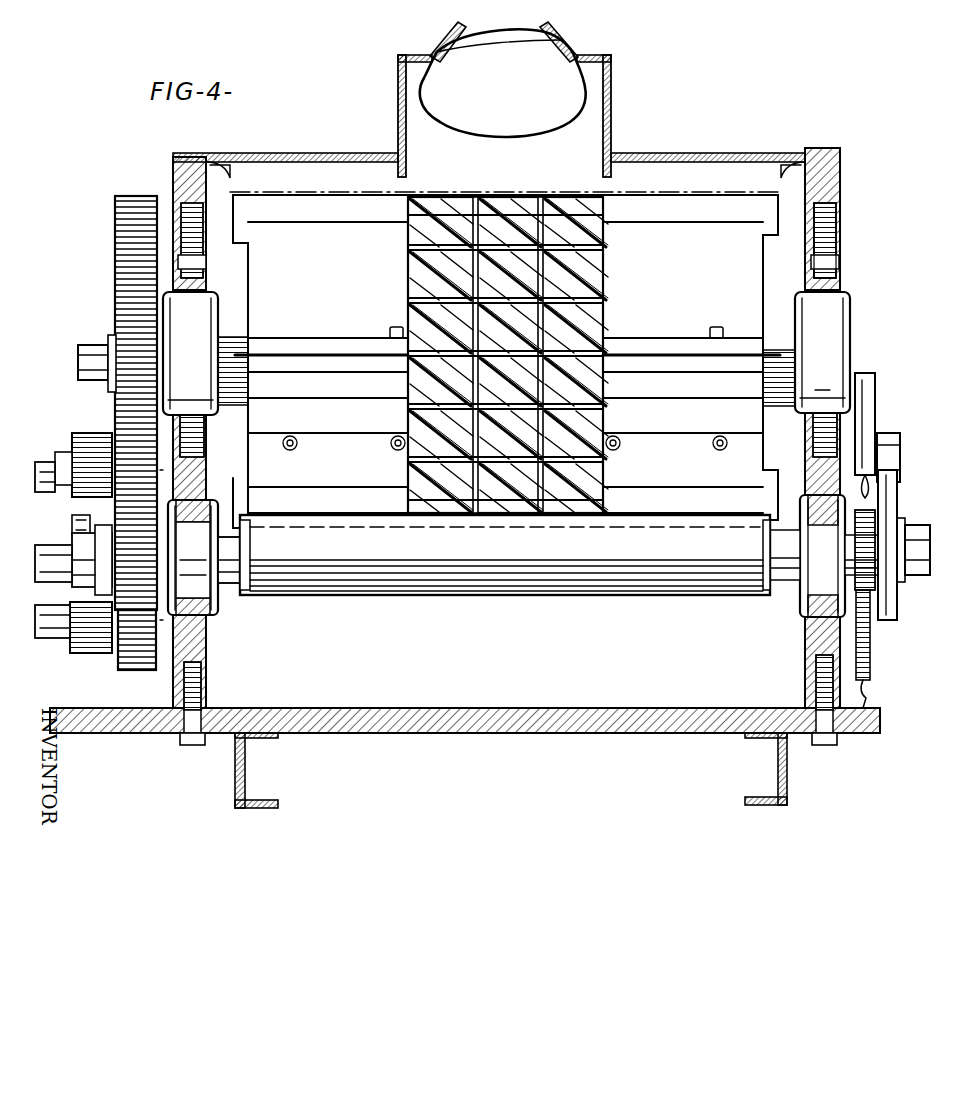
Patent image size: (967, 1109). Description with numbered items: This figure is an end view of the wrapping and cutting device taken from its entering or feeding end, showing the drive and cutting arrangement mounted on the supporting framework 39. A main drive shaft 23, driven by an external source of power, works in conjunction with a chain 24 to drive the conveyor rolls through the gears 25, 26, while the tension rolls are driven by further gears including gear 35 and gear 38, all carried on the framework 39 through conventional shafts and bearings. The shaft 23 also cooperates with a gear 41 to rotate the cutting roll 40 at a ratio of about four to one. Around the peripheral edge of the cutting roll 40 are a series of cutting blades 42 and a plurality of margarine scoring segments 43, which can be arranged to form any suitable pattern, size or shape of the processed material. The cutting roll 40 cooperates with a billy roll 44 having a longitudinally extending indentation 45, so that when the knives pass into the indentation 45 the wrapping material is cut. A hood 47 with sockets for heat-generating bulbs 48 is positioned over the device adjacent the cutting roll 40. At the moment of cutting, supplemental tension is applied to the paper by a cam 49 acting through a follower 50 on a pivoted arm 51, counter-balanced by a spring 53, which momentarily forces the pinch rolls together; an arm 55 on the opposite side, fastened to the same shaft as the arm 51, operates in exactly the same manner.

The main drive shaft 23 is at (240, 574).
The chain 24 is at (72, 525).
The gear 25 is at (148, 560).
The gear 26 is at (134, 660).
The gear 35 is at (88, 654).
The gear 38 is at (80, 445).
The supporting framework 39 is at (843, 210).
The cutting roll 40 is at (838, 300).
The gear 41 is at (116, 198).
The cutting blades 42 is at (282, 199).
The margarine scoring segments 43 is at (409, 212).
The billy roll 44 is at (472, 582).
The longitudinally extending indentation 45 is at (622, 527).
The hood 47 is at (397, 92).
The heat-generating bulbs 48 is at (545, 65).
The cam 49 is at (896, 500).
The follower 50 is at (896, 445).
The pivoted arm 51 is at (870, 410).
The spring 53 is at (873, 642).
The arm 55 is at (114, 396).